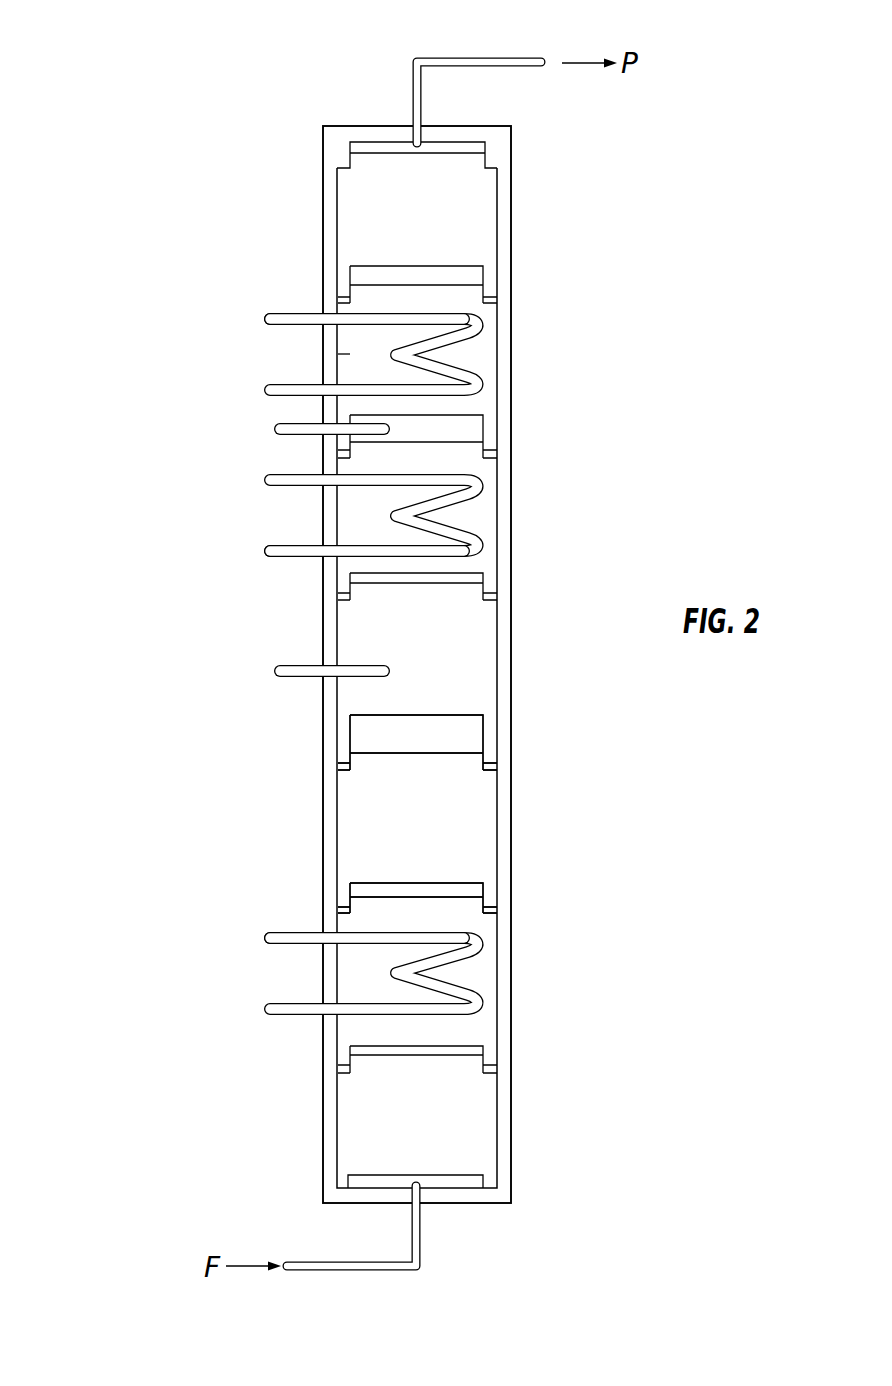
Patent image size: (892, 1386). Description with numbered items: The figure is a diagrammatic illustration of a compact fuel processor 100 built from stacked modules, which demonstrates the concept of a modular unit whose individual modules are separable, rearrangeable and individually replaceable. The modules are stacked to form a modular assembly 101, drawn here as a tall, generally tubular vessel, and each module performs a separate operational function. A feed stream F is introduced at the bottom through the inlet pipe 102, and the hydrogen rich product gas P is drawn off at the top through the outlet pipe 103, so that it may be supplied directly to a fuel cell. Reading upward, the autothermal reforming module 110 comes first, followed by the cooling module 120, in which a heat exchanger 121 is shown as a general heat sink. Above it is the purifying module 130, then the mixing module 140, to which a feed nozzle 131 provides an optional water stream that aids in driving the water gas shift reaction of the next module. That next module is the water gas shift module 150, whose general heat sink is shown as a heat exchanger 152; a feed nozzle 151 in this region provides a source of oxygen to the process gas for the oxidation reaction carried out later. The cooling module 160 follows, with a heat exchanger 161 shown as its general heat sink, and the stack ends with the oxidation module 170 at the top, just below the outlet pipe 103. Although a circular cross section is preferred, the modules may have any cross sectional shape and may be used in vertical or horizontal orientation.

The compact fuel processor 100 is at (169, 95).
The modular assembly 101 is at (340, 125).
The inlet pipe 102 is at (318, 1258).
The outlet pipe 103 is at (468, 58).
The autothermal reforming module 110 is at (440, 1140).
The cooling module 120 is at (480, 1028).
The heat exchanger 121 is at (287, 930).
The purifying module 130 is at (440, 831).
The feed nozzle 131 is at (287, 665).
The mixing module 140 is at (440, 642).
The water gas shift module 150 is at (480, 513).
The feed nozzle 151 is at (275, 428).
The heat exchanger 152 is at (287, 543).
The cooling module 160 is at (480, 363).
The heat exchanger 161 is at (287, 312).
The oxidation module 170 is at (440, 220).